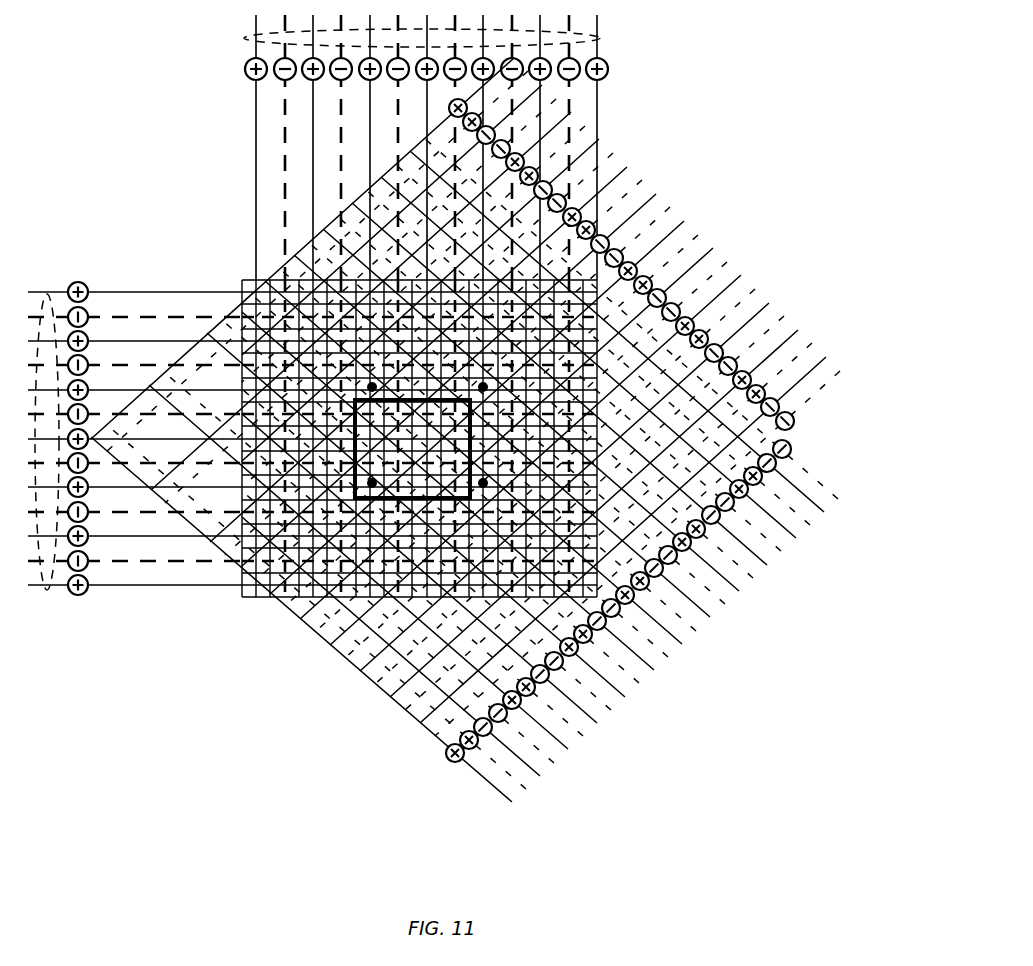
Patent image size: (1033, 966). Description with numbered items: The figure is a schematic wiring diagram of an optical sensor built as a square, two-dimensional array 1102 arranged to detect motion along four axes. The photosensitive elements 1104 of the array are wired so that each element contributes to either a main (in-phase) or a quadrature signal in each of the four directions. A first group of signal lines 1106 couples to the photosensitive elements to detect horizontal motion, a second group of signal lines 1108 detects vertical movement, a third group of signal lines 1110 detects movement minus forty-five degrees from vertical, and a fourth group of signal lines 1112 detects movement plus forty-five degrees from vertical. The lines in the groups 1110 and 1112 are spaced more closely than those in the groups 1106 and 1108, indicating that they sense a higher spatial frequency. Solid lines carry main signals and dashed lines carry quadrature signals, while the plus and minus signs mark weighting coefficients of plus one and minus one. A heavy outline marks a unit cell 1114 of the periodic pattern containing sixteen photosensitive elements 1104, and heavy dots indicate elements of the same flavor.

The square 2D array 1102 is at (124, 140).
The photosensitive elements 1104 is at (244, 282).
The first group of signal lines 1106 is at (600, 40).
The second group of signal lines 1108 is at (50, 294).
The third group of signal lines 1110 is at (810, 470).
The fourth group of signal lines 1112 is at (797, 408).
The unit cell 1114 is at (421, 433).